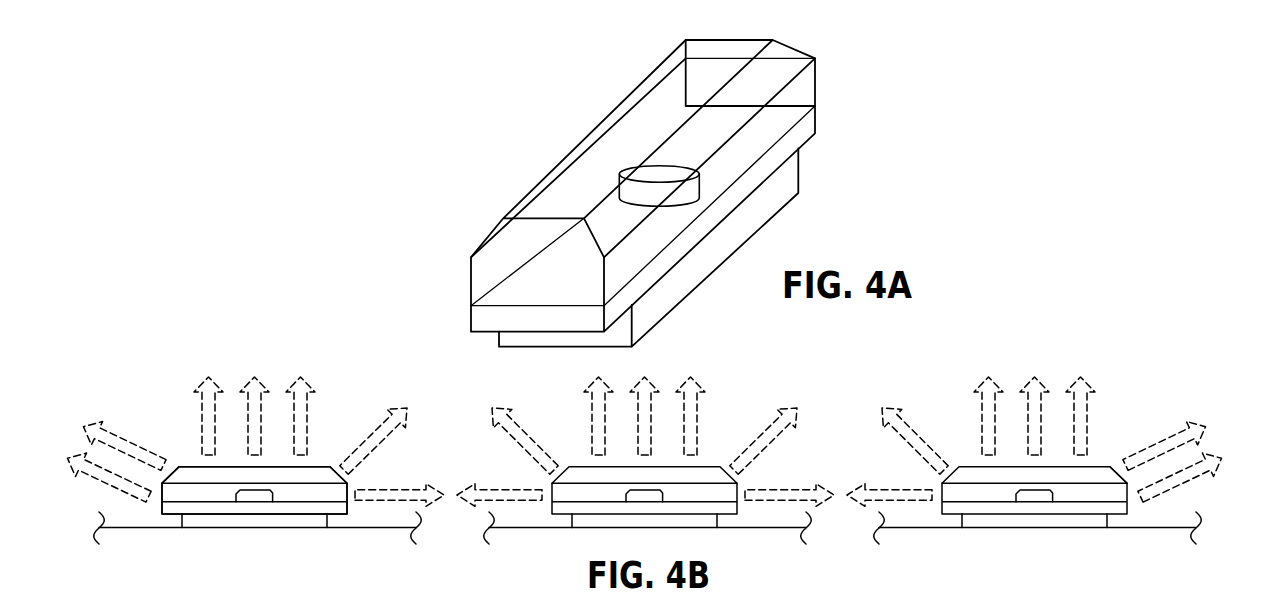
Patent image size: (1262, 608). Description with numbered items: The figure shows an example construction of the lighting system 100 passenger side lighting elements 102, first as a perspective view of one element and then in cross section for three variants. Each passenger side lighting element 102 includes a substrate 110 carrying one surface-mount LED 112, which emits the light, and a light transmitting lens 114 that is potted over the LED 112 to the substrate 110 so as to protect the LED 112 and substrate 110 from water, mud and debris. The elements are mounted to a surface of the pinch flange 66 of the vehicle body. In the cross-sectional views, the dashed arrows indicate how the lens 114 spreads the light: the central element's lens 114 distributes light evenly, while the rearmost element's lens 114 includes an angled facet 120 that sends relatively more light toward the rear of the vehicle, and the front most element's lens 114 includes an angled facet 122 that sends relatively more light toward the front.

In FIG. 4B, the lighting assembly 100 is at (179, 404).
In FIG. 4A, the passenger side lighting element 102 is at (780, 206).
In FIG. 4B, the passenger side lighting element 102 is at (160, 522).
In FIG. 4A, the substrate 110 is at (782, 175).
In FIG. 4B, the substrate 110 is at (345, 520).
In FIG. 4A, the LED 112 is at (655, 173).
In FIG. 4B, the LED 112 is at (260, 490).
In FIG. 4A, the light transmitting lens 114 is at (800, 88).
In FIG. 4B, the light transmitting lens 114 is at (350, 483).
In FIG. 4B, the angled facet 120 is at (175, 465).
In FIG. 4B, the angled facet 122 is at (1117, 473).
In FIG. 4B, the pinch flange 66 is at (516, 530).